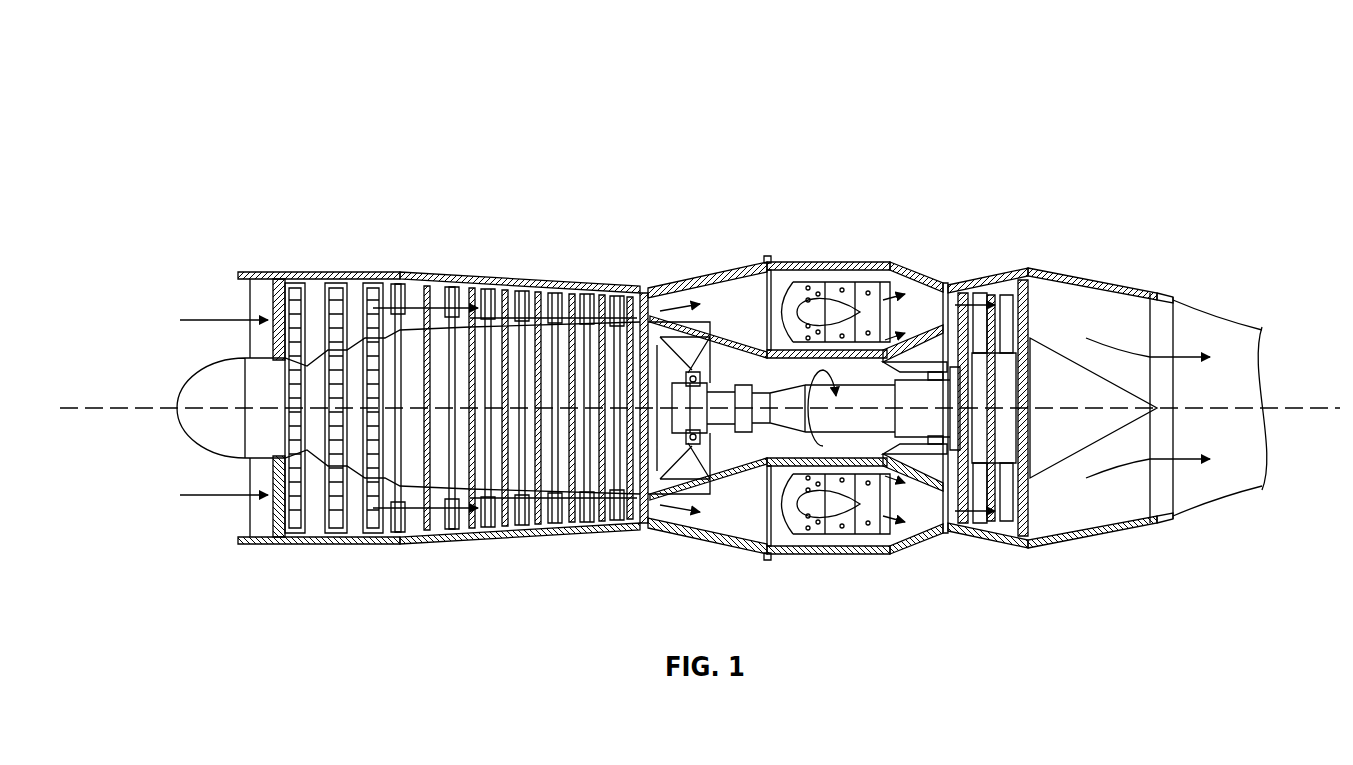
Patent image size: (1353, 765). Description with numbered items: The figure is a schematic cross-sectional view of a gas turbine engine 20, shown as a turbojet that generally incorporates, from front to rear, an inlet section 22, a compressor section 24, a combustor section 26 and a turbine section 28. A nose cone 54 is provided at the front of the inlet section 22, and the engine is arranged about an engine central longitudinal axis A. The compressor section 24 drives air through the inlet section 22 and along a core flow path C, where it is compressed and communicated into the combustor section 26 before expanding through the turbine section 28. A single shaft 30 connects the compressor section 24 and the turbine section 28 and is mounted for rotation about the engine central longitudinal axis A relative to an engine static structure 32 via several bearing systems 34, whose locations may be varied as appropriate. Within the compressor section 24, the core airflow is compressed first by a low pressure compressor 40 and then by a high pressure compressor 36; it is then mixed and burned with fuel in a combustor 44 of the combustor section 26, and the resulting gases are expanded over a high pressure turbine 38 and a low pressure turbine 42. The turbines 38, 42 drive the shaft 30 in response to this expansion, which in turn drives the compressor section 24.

The gas turbine engine 20 is at (203, 97).
The inlet section 22 is at (257, 268).
The compressor section 24 is at (485, 268).
The combustor section 26 is at (810, 246).
The turbine section 28 is at (1028, 262).
The shaft 30 is at (882, 417).
The engine static structure 32 is at (727, 282).
The bearing systems 34 is at (687, 350).
The high pressure compressor 36 is at (507, 545).
The high pressure turbine 38 is at (980, 467).
The low pressure compressor 40 is at (340, 550).
The low pressure turbine 42 is at (1020, 555).
The combustor 44 is at (880, 310).
The nose cone 54 is at (195, 390).
The engine central longitudinal axis A is at (153, 410).
The core flow path C is at (212, 320).